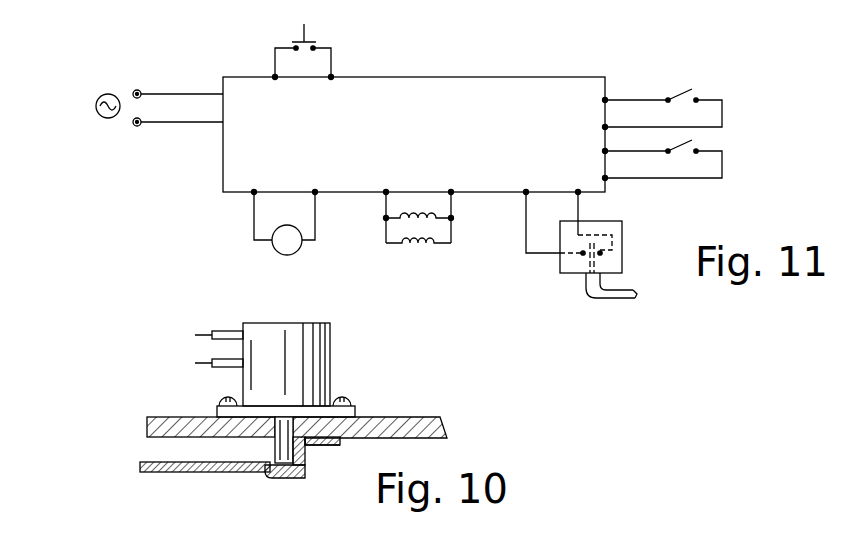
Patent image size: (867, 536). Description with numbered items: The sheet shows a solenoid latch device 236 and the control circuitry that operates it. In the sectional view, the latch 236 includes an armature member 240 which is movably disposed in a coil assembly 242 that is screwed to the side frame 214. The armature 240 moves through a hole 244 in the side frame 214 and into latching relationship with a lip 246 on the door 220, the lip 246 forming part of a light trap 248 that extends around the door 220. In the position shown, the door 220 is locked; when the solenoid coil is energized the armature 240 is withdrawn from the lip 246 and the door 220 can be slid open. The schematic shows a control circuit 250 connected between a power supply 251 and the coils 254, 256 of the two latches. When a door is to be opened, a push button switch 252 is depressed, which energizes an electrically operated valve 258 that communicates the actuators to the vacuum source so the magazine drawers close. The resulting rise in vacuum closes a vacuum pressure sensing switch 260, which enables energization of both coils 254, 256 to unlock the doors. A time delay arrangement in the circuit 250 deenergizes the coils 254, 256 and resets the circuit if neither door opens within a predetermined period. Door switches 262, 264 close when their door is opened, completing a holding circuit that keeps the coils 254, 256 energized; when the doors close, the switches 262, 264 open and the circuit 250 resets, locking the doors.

In FIG. 11, the control circuit 250 is at (566, 70).
In FIG. 11, the power supply 251 is at (108, 93).
In FIG. 11, the push button switch 252 is at (312, 42).
In FIG. 11, the coil 254 is at (418, 214).
In FIG. 11, the coil 256 is at (424, 246).
In FIG. 11, the electrically operated valve 258 is at (268, 253).
In FIG. 11, the vacuum pressure sensing switch 260 is at (560, 262).
In FIG. 11, the door switch 262 is at (678, 91).
In FIG. 11, the door switch 264 is at (688, 141).
In FIG. 10, the side frame 214 is at (145, 428).
In FIG. 10, the door 220 is at (160, 472).
In FIG. 10, the solenoid latch device 236 is at (348, 374).
In FIG. 10, the armature member 240 is at (275, 441).
In FIG. 10, the coil assembly 242 is at (292, 346).
In FIG. 10, the hole 244 is at (358, 417).
In FIG. 10, the lip 246 is at (309, 462).
In FIG. 10, the light trap 248 is at (288, 479).